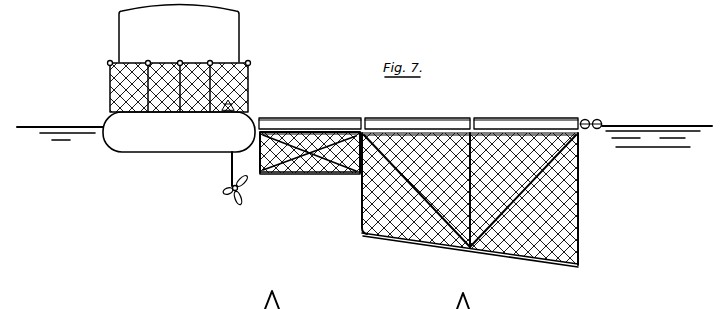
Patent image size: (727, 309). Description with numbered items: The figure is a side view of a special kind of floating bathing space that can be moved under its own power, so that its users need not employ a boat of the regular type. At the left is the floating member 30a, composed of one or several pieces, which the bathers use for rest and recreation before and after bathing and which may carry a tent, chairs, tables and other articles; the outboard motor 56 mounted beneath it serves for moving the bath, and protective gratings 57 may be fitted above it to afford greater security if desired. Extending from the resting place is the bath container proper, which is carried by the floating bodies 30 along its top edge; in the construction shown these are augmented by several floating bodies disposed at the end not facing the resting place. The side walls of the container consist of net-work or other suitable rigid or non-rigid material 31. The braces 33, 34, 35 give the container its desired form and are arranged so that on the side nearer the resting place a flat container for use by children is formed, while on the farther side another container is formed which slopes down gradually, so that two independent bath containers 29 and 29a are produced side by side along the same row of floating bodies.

The bath container 29 is at (466, 199).
The bath container 29a is at (419, 185).
The floating bodies 30 is at (328, 118).
The floating member 30a is at (158, 146).
The net-work or other suitable rigid or non-rigid material 31 is at (567, 183).
The strut 33 is at (578, 219).
The strut 34 is at (310, 175).
The strut 35 is at (440, 238).
The outboard motor 56 is at (230, 172).
The protective gratings 57 is at (110, 85).